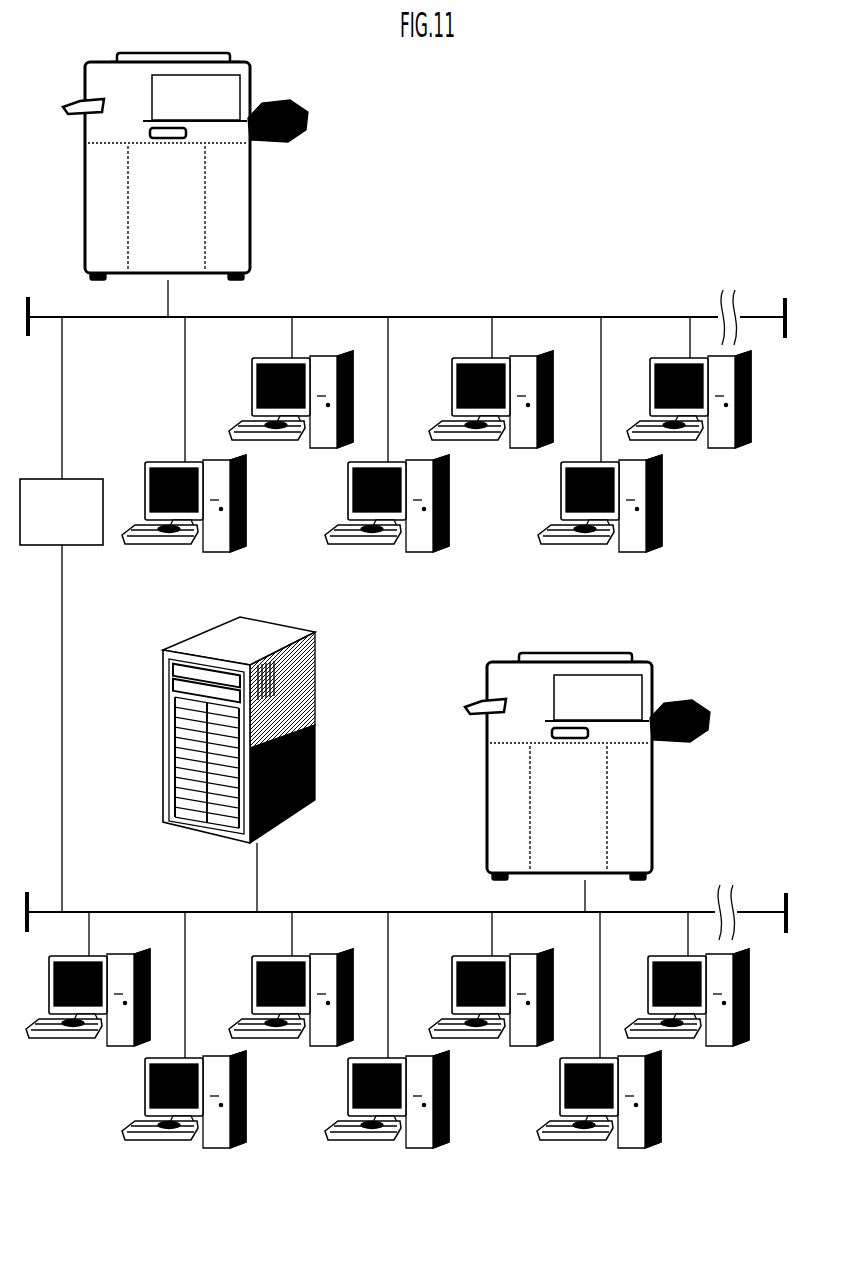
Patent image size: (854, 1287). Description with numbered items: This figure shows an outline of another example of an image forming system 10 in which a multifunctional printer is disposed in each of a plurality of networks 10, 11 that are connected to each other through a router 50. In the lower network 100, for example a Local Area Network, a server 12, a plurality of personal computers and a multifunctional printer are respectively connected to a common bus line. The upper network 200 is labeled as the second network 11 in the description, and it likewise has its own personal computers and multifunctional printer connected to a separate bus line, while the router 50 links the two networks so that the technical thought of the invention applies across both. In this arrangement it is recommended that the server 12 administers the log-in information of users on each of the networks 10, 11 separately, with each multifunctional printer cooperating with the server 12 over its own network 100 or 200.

The image forming system 10 is at (693, 857).
The network 11 is at (560, 245).
The server 12 is at (165, 752).
The router 50 is at (42, 547).
The network 100 is at (360, 890).
The second network (LAN) 200 is at (412, 298).